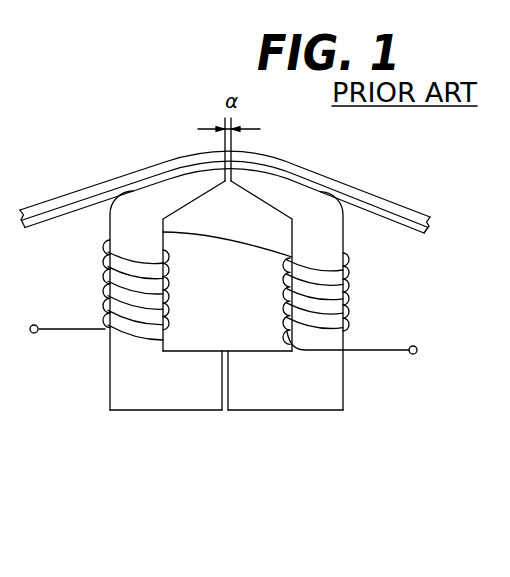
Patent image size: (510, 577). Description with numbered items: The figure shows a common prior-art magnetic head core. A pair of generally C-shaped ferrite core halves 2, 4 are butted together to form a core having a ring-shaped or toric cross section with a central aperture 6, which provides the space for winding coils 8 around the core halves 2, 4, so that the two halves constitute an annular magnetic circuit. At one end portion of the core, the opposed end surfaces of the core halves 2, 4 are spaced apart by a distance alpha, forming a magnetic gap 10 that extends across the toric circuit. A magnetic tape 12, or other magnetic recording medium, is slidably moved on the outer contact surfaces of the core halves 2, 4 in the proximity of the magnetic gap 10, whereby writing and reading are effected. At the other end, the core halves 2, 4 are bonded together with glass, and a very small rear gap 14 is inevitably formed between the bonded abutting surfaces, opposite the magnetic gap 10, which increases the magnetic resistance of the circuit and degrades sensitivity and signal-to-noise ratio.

The ferrite core half 2 is at (145, 398).
The ferrite core half 4 is at (300, 400).
The central aperture 6 is at (237, 304).
The coils 8 is at (104, 259).
The magnetic gap 10 is at (224, 184).
The magnetic tape 12 is at (380, 188).
The rear gap 14 is at (224, 413).